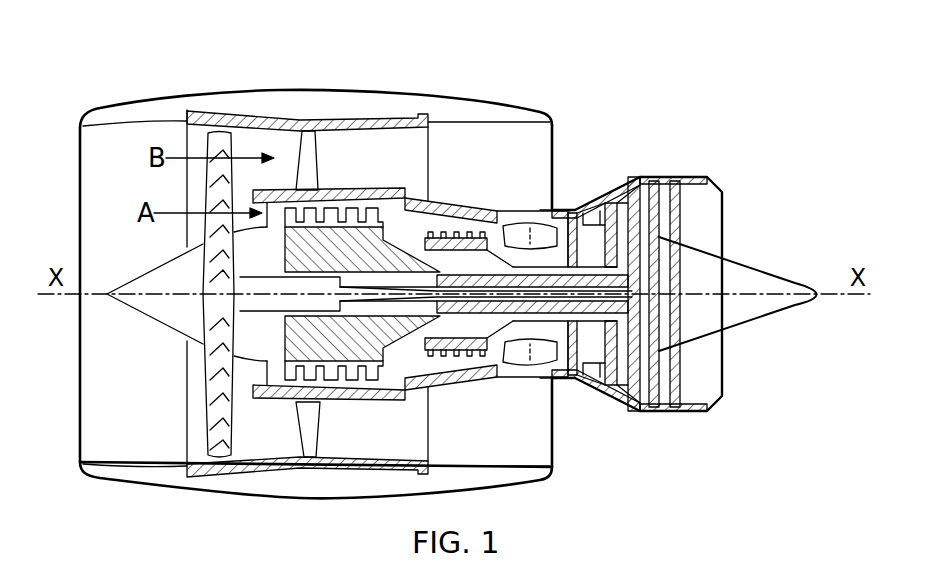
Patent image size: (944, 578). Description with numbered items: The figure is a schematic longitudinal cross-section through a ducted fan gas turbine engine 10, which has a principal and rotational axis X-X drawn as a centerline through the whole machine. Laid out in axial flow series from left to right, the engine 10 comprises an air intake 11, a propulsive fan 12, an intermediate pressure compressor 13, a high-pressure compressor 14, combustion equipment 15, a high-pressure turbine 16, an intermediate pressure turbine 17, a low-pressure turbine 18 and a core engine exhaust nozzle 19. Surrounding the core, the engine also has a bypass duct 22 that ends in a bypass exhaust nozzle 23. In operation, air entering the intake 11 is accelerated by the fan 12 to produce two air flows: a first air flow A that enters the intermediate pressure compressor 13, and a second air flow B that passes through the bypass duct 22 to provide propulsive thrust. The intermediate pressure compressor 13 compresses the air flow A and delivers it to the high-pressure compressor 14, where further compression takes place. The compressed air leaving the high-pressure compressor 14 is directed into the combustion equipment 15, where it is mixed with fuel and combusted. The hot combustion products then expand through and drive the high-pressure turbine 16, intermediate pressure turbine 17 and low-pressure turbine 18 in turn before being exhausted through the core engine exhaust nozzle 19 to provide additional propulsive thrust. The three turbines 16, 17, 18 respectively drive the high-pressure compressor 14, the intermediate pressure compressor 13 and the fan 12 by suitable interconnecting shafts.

The ducted fan gas turbine engine 10 is at (131, 78).
The air intake 11 is at (128, 124).
The propulsive fan 12 is at (207, 422).
The intermediate pressure compressor 13 is at (350, 378).
The high-pressure compressor 14 is at (450, 232).
The combustion equipment 15 is at (518, 360).
The high-pressure turbine 16 is at (575, 378).
The intermediate pressure turbine 17 is at (610, 194).
The low-pressure turbine 18 is at (626, 401).
The core engine exhaust nozzle 19 is at (713, 181).
The bypass duct 22 is at (494, 157).
The bypass exhaust nozzle 23 is at (551, 118).